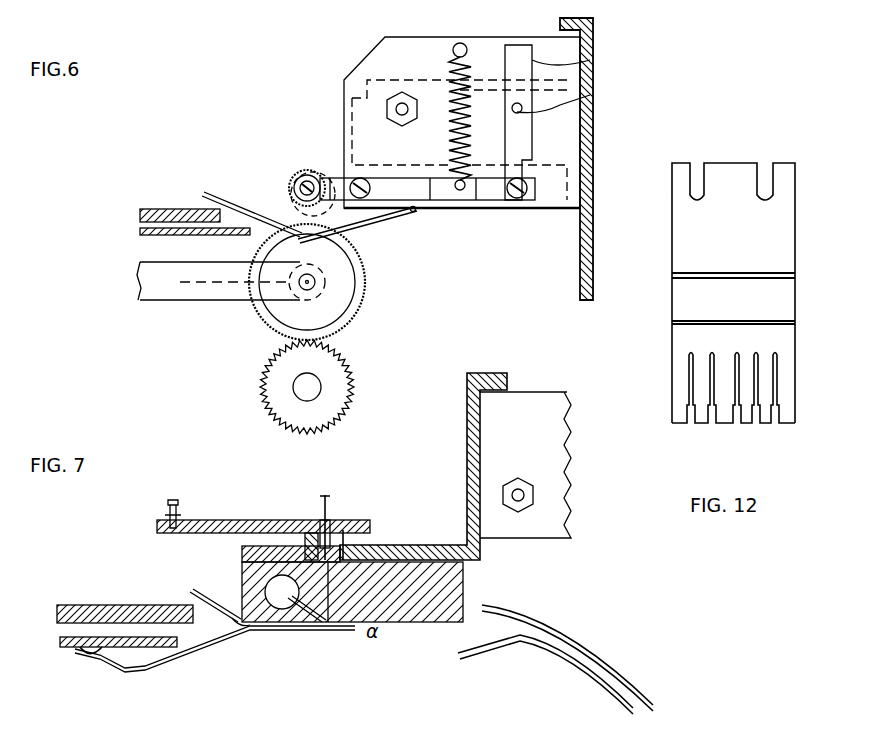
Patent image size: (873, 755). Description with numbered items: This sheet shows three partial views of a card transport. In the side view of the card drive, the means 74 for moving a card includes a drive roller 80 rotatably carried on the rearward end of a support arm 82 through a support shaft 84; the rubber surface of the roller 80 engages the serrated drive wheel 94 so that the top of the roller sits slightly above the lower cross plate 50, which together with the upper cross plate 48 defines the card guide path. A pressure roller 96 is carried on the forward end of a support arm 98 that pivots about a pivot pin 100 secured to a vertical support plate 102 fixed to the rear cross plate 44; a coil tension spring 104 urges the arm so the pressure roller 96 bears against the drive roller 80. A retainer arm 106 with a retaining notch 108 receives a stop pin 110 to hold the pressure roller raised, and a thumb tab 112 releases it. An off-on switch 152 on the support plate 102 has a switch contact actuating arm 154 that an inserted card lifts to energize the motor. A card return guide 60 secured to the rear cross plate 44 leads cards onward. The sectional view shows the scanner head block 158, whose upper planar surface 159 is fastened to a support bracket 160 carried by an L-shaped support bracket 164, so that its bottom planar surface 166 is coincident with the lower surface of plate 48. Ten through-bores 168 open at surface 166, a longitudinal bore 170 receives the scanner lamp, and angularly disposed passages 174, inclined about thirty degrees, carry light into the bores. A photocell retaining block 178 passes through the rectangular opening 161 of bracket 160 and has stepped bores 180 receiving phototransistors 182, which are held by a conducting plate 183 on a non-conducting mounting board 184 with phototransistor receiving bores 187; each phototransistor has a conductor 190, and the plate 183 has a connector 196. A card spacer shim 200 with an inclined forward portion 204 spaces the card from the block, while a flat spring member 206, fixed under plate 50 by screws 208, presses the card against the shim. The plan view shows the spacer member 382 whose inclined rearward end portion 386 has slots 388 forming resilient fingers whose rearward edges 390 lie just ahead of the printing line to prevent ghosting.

In FIG. 6, the rear cross plate 44 is at (593, 168).
In FIG. 6, the upper cross plate 48 is at (155, 209).
In FIG. 7, the upper cross plate 48 is at (80, 605).
In FIG. 6, the lower cross plate 50 is at (150, 235).
In FIG. 7, the lower cross plate 50 is at (62, 645).
In FIG. 7, the card return guide 60 is at (635, 638).
In FIG. 6, the means for effecting selective movement of a card 74 is at (416, 258).
In FIG. 6, the drive wheel or roller 80 is at (343, 290).
In FIG. 6, the support arm 82 is at (200, 290).
In FIG. 6, the support shaft 84 is at (307, 282).
In FIG. 6, the drive wheel 94 is at (335, 383).
In FIG. 6, the pressure roller 96 is at (300, 172).
In FIG. 6, the support arm 98 is at (490, 193).
In FIG. 6, the pivot pin 100 is at (360, 180).
In FIG. 6, the vertical support plate 102 is at (425, 28).
In FIG. 6, the coil tension spring 104 is at (498, 30).
In FIG. 6, the retainer arm 106 is at (585, 55).
In FIG. 6, the retaining notch 108 is at (577, 97).
In FIG. 6, the stop pin 110 is at (520, 113).
In FIG. 6, the thumb tab 112 is at (534, 103).
In FIG. 6, the off-on switch 152 is at (352, 90).
In FIG. 6, the switch contact actuating arm 154 is at (235, 200).
In FIG. 7, the scanner head block 158 is at (455, 575).
In FIG. 7, the upper planar surface 159 is at (255, 556).
In FIG. 7, the support bracket 160 is at (467, 460).
In FIG. 7, the rectangular opening 161 is at (380, 545).
In FIG. 7, the L-shaped support bracket 164 is at (595, 365).
In FIG. 7, the bottom planar surface 166 is at (450, 622).
In FIG. 7, the through-bores 168 is at (330, 560).
In FIG. 7, the longitudinally extending bore 170 is at (282, 609).
In FIG. 7, the angularly disposed passages 174 is at (318, 622).
In FIG. 7, the photocell retaining block 178 is at (350, 560).
In FIG. 7, the stepped bores 180 is at (312, 533).
In FIG. 7, the phototransistor 182 is at (330, 505).
In FIG. 7, the conducting plate 183 is at (235, 521).
In FIG. 7, the non-conducting mounting board 184 is at (240, 497).
In FIG. 7, the phototransistor receiving bores 187 is at (343, 530).
In FIG. 7, the conductor 190 is at (320, 500).
In FIG. 7, the connector 196 is at (165, 510).
In FIG. 7, the card spacer shim 200 is at (236, 620).
In FIG. 7, the forward portion of the spacer shim 204 is at (195, 592).
In FIG. 7, the flat spring member 206 is at (180, 658).
In FIG. 7, the screws 208 is at (95, 652).
In FIG. 12, the spacer member 382 is at (775, 228).
In FIG. 12, the rearward end portion 386 is at (788, 388).
In FIG. 12, the slots 388 is at (738, 415).
In FIG. 12, the rearward edges 390 is at (710, 450).